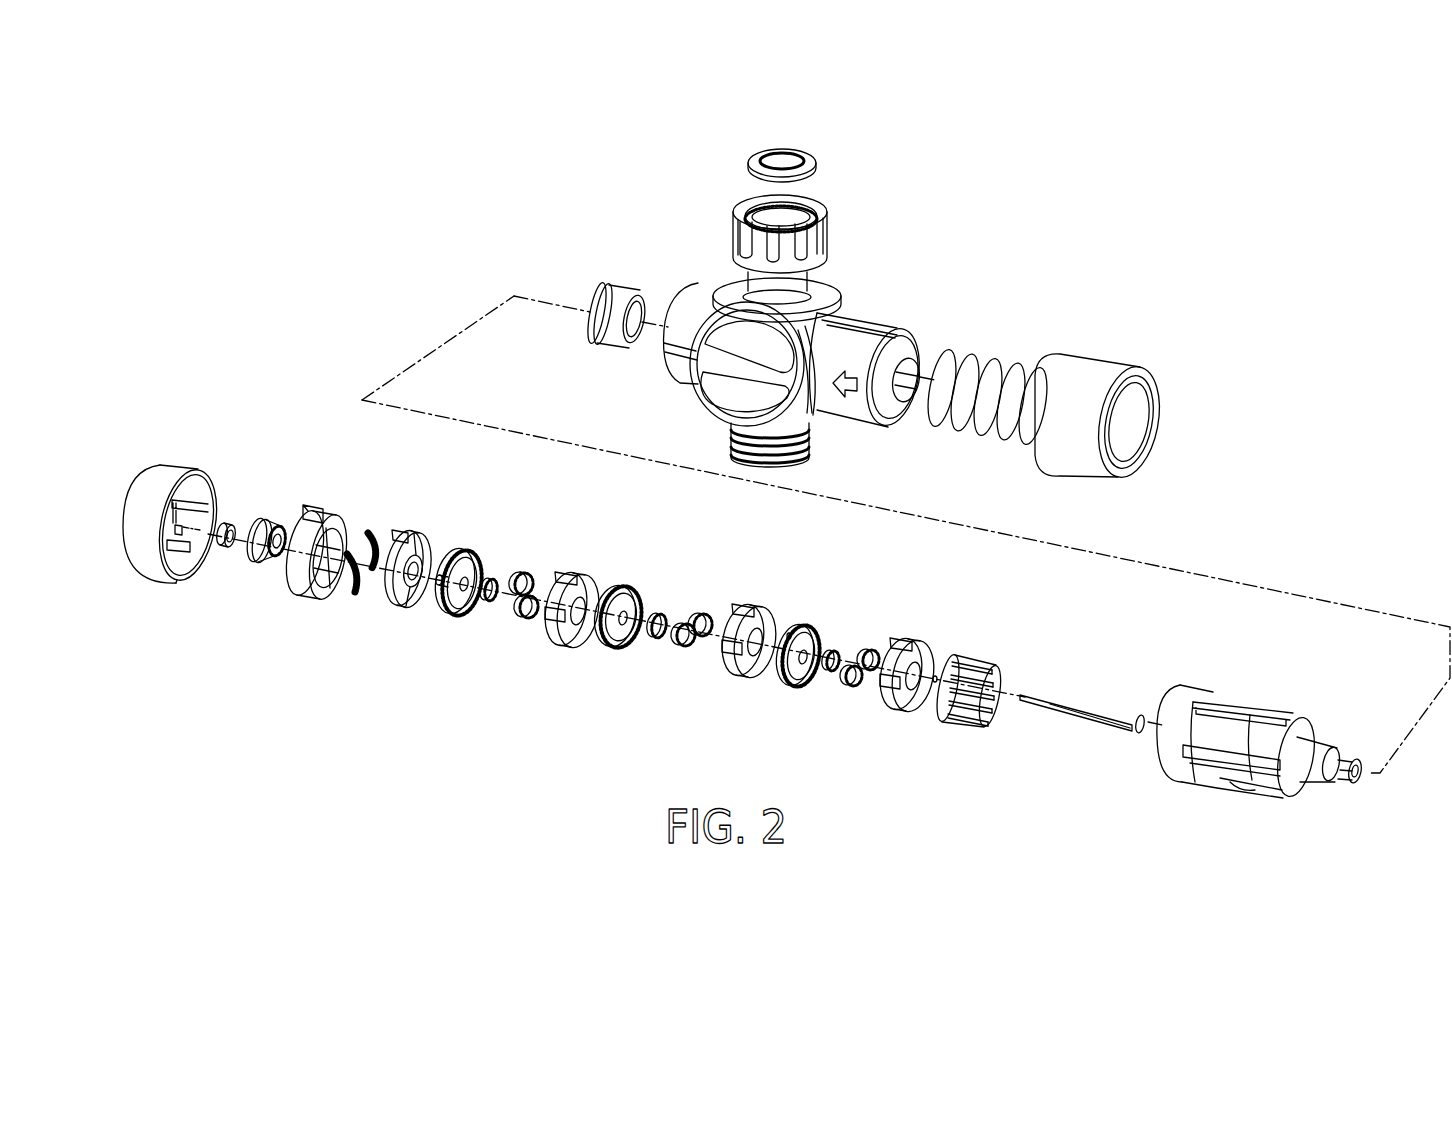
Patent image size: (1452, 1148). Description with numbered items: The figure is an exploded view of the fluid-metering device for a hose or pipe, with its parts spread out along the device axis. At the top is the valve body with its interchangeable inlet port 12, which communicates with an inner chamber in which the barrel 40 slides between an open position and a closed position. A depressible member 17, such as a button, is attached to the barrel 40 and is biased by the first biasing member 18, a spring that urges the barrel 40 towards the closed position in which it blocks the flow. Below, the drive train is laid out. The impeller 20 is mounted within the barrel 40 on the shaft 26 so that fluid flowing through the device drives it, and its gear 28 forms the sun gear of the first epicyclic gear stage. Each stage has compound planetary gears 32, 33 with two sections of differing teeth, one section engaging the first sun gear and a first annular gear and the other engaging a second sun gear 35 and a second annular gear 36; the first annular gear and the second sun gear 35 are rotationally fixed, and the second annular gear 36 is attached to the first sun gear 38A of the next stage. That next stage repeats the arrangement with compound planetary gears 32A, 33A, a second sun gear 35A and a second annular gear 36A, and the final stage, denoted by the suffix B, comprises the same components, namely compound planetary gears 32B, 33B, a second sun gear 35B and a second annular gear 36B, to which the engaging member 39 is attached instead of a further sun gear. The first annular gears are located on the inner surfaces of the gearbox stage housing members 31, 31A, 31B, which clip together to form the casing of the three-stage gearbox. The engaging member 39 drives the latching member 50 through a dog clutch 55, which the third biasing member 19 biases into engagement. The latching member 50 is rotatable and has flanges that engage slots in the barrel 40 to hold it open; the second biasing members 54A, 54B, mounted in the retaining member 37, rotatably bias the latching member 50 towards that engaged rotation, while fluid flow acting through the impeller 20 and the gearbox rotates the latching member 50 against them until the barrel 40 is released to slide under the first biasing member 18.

The inlet port 12 is at (827, 238).
The depressible member 17 is at (1102, 353).
The first biasing member 18 is at (1036, 358).
The third biasing member 19 is at (223, 550).
The impeller 20 is at (960, 725).
The shaft 26 is at (1098, 727).
The gear 28 is at (937, 676).
The gearbox stage housing member 31 is at (893, 712).
The gearbox stage housing member 31A is at (732, 679).
The gearbox stage housing member 31B is at (568, 645).
The compound planetary gear 32 is at (852, 687).
The compound planetary gear 32A is at (683, 648).
The pinion gear 32B is at (523, 573).
The compound planetary gear 33 is at (872, 650).
The pinion gear 33A is at (702, 613).
The compound planetary gear 33B is at (528, 619).
The second sun gear 35 is at (832, 650).
The second sun gear 35A is at (657, 613).
The sun gear 35B is at (492, 602).
The second annular gear 36 is at (792, 689).
The second annular gear 36A is at (617, 650).
The second annular gear 36B is at (455, 617).
The retaining member 37 is at (301, 598).
The first sun gear 38A is at (787, 634).
The engaging member 39 is at (440, 575).
The barrel 40 is at (1183, 787).
The latching member 50 is at (402, 612).
The second biasing member 54A is at (353, 594).
The second biasing member 54B is at (376, 530).
The dog clutch 55 is at (257, 560).